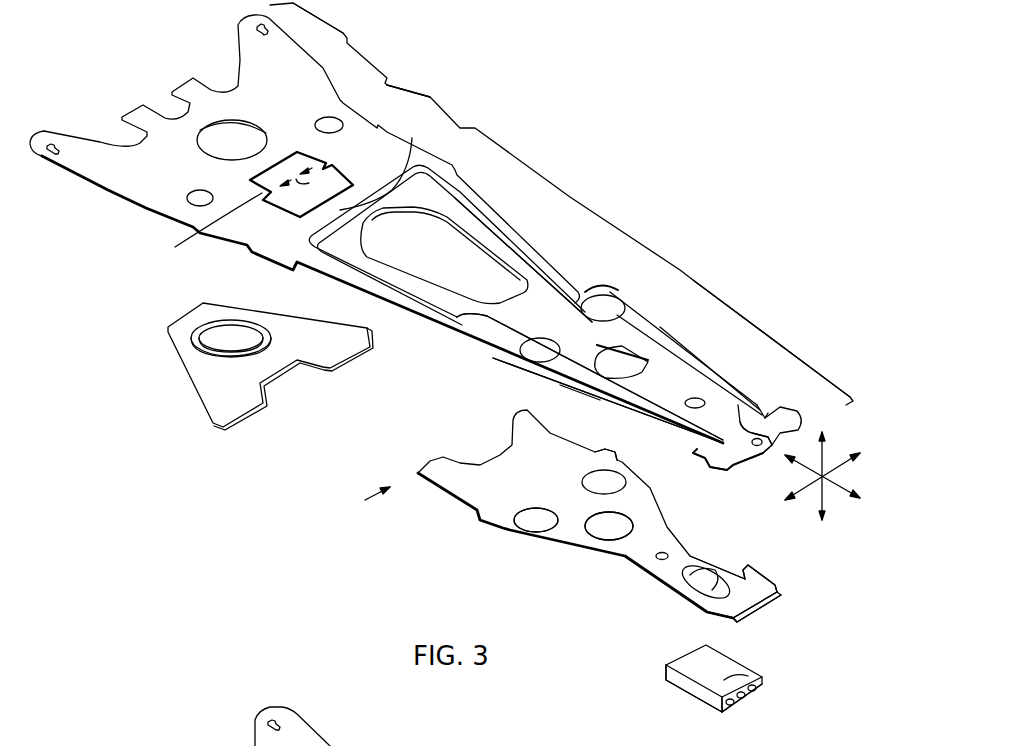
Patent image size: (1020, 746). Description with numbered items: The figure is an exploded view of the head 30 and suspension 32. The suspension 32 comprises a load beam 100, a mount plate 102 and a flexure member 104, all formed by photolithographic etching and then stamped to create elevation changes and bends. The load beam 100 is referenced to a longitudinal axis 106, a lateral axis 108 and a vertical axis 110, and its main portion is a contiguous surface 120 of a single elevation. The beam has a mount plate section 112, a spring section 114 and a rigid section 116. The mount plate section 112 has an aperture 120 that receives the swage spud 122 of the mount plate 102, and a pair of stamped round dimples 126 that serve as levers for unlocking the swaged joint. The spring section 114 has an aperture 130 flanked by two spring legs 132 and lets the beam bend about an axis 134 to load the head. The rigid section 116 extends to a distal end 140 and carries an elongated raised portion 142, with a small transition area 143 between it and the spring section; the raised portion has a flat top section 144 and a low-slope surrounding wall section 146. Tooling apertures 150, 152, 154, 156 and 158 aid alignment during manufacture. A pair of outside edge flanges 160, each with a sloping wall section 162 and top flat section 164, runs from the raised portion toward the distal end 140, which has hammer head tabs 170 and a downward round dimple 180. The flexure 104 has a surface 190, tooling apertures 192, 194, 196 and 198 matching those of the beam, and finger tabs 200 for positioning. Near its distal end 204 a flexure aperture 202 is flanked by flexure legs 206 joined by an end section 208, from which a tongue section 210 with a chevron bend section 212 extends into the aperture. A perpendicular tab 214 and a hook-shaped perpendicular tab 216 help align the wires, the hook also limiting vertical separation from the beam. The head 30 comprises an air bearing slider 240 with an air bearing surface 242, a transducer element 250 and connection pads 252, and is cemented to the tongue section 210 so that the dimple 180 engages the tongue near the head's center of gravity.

The head 30 is at (666, 668).
The suspension 32 is at (367, 503).
The load beam 100 is at (150, 214).
The mount plate 102 is at (182, 388).
The flexure member 104 is at (418, 470).
The longitudinal axis 106 is at (836, 470).
The lateral axis 108 is at (838, 492).
The vertical axis 110 is at (826, 450).
The mount plate section 112 is at (335, 18).
The spring section 114 is at (426, 84).
The rigid section 116 is at (771, 316).
The surface 120 is at (256, 125).
The swage spud 122 is at (218, 322).
The stamped round dimples 126 is at (316, 126).
The aperture 130 is at (198, 223).
The spring legs 132 is at (338, 160).
The axis 134 is at (309, 182).
The distal end 140 is at (760, 463).
The raised portion 142 is at (524, 316).
The transition area 143 is at (385, 164).
The flat top section 144 is at (572, 338).
The sloping wall section 146 is at (458, 337).
The tooling aperture 150 is at (428, 261).
The tooling aperture 152 is at (588, 290).
The tooling aperture 154 is at (494, 358).
The tooling aperture 156 is at (624, 320).
The tooling aperture 158 is at (712, 378).
The outside edge flanges 160 is at (612, 288).
The sloping wall section 162 is at (670, 332).
The top flat section 164 is at (700, 346).
The hammer head tabs 170 is at (790, 400).
The round dimple 180 is at (740, 400).
The surface 190 is at (484, 504).
The tooling aperture 192 is at (582, 483).
The tooling aperture 194 is at (508, 529).
The tooling aperture 196 is at (587, 527).
The tooling aperture 198 is at (640, 557).
The finger tabs 200 is at (609, 450).
The flexure aperture 202 is at (660, 570).
The distal end 204 is at (768, 603).
The flexure legs 206 is at (728, 572).
The end section 208 is at (748, 614).
The tongue section 210 is at (700, 565).
The bend section 212 is at (706, 574).
The perpendicular tab 214 is at (726, 621).
The perpendicular tab 216 is at (778, 590).
The air bearing slider 240 is at (690, 690).
The air bearing surface 242 is at (704, 708).
The transducer element 250 is at (752, 700).
The connection pads 252 is at (738, 688).